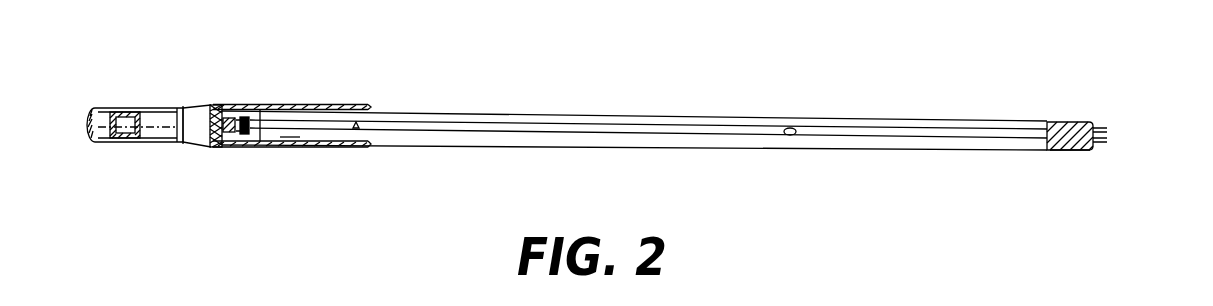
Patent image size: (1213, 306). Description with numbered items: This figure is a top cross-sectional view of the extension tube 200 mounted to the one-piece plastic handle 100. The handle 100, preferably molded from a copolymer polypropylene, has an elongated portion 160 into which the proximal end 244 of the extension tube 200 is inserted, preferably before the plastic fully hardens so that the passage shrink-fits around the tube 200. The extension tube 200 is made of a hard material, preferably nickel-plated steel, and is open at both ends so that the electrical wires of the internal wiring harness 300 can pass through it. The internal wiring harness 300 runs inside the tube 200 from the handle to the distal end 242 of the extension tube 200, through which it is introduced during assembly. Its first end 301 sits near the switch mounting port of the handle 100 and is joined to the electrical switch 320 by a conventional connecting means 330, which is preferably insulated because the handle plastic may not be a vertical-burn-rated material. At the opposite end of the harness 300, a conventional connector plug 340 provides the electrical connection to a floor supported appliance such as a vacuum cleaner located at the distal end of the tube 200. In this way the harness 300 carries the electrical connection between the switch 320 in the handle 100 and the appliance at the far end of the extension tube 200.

The handle 100 is at (238, 152).
The elongated portion 160 is at (326, 148).
The extension tube 200 is at (921, 118).
The distal end 242 is at (1058, 156).
The proximal end 244 is at (287, 137).
The internal wiring harness 300 is at (1008, 127).
The first end 301 is at (307, 118).
The electrical switch 320 is at (216, 106).
The connecting means 330 is at (232, 115).
The connector plug 340 is at (1087, 123).